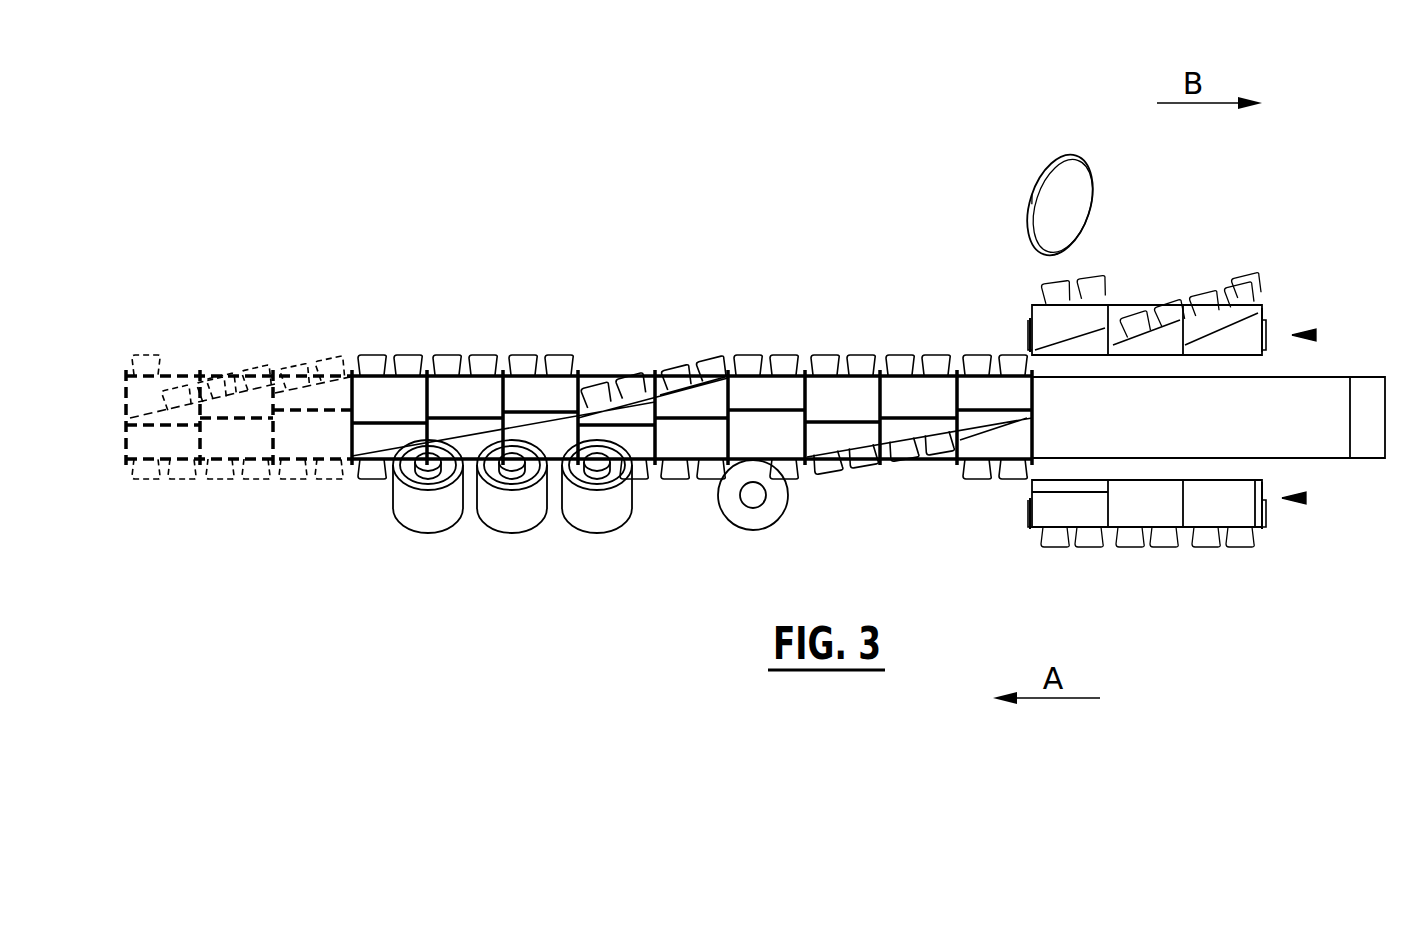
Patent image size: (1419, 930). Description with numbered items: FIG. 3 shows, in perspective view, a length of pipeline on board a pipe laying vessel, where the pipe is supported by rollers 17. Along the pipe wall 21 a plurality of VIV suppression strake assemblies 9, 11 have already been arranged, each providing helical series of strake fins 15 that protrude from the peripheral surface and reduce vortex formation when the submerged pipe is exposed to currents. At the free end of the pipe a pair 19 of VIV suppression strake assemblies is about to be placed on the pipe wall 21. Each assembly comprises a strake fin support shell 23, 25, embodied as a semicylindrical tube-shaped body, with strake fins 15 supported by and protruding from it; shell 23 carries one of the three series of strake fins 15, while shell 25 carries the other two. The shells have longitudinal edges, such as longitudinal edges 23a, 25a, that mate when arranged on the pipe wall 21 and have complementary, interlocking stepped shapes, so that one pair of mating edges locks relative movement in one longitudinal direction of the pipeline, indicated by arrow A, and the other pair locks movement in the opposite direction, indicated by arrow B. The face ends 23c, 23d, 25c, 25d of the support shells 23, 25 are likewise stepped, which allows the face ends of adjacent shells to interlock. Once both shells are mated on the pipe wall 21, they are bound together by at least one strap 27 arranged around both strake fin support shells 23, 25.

The VIV suppression strake assembly 9 is at (467, 306).
The VIV suppression strake assembly 11 is at (688, 328).
The strake fin 15 is at (1235, 305).
The roller 17 is at (422, 515).
The pair of VIV suppression strake assemblies 19 is at (1316, 335).
The pipe wall 21 is at (1255, 405).
The strake fin support shell 23 is at (1148, 505).
The longitudinal edge 23a is at (1151, 472).
The face end 23c is at (1025, 522).
The face end 23d is at (1265, 521).
The strake fin support shell 25 is at (1162, 431).
The longitudinal edge 25a is at (1115, 375).
The face end 25c is at (1025, 322).
The face end 25d is at (1265, 313).
The strap 27 is at (1078, 165).